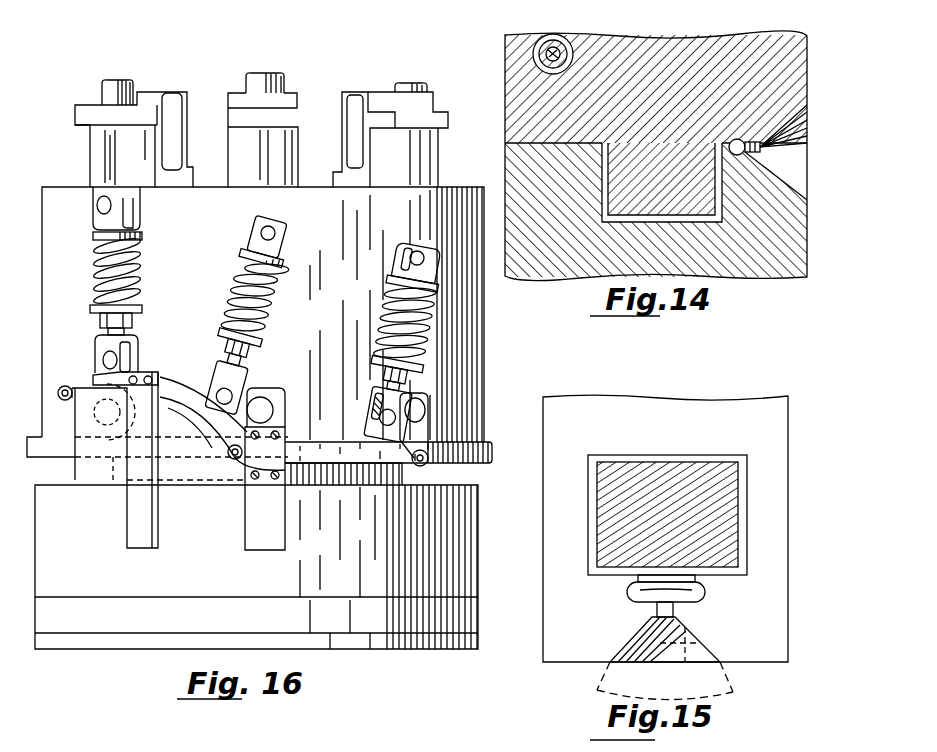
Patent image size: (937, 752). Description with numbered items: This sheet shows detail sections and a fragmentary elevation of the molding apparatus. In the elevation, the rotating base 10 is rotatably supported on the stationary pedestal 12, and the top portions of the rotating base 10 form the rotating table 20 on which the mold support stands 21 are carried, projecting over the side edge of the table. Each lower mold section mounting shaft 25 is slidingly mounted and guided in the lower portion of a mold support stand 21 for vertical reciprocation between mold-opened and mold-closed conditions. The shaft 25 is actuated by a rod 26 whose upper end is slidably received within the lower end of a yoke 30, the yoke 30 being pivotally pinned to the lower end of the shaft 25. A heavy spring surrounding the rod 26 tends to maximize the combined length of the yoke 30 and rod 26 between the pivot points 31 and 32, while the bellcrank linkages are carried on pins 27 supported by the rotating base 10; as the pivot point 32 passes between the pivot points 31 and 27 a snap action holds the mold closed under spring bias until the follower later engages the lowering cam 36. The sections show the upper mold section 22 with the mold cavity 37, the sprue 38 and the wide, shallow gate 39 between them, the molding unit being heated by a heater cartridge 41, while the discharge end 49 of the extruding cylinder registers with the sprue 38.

In FIG. 16, the rotating base 10 is at (484, 341).
In FIG. 16, the stationary pedestal 12 is at (378, 566).
In FIG. 16, the rotating table 20 is at (62, 187).
In FIG. 16, the mold support stand 21 is at (227, 137).
In FIG. 14, the upper mold section 22 is at (807, 80).
In FIG. 15, the upper mold section 22 is at (772, 413).
In FIG. 16, the lower mold section mounting shaft 25 is at (102, 90).
In FIG. 16, the rod 26 is at (250, 365).
In FIG. 16, the pin 27 is at (267, 407).
In FIG. 16, the yoke 30 is at (244, 240).
In FIG. 16, the pivot point 31 is at (276, 233).
In FIG. 16, the pivot point 32 is at (217, 377).
In FIG. 16, the lowering cam 36 is at (170, 405).
In FIG. 14, the mold cavity 37 is at (602, 198).
In FIG. 15, the mold cavity 37 is at (687, 458).
In FIG. 14, the sprue 38 is at (800, 183).
In FIG. 15, the sprue 38 is at (703, 643).
In FIG. 14, the gate 39 is at (733, 155).
In FIG. 15, the gate 39 is at (637, 578).
In FIG. 14, the heater cartridge 41 is at (573, 63).
In FIG. 15, the discharge end 49 is at (610, 672).